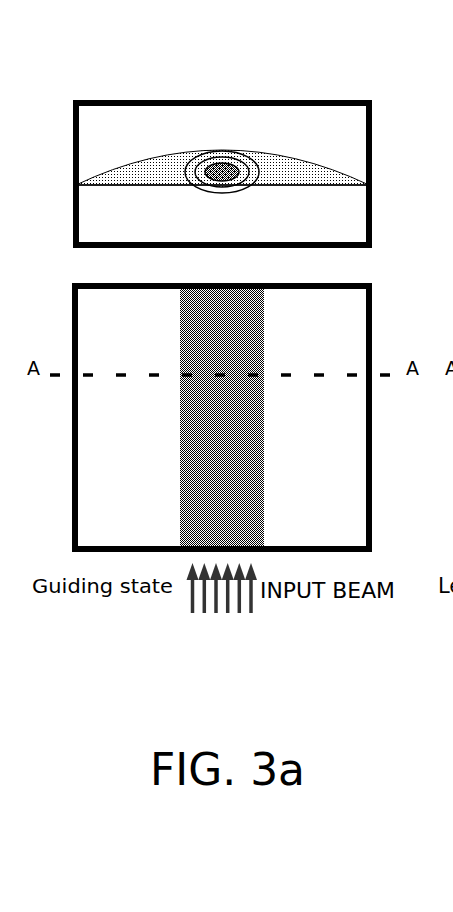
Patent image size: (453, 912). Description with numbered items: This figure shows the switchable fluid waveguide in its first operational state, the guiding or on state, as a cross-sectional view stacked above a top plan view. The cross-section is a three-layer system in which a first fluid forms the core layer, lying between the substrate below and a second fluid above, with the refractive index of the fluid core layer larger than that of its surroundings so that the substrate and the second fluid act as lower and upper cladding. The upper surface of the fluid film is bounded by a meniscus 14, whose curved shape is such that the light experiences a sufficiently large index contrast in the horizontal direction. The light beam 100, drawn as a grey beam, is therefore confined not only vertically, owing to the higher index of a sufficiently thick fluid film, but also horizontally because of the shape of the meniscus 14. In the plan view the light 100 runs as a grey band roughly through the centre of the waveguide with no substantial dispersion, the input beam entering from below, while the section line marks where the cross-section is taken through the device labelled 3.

The optical waveguide device 3 is at (317, 100).
The meniscus 14 is at (155, 160).
The light beam 100 is at (237, 424).